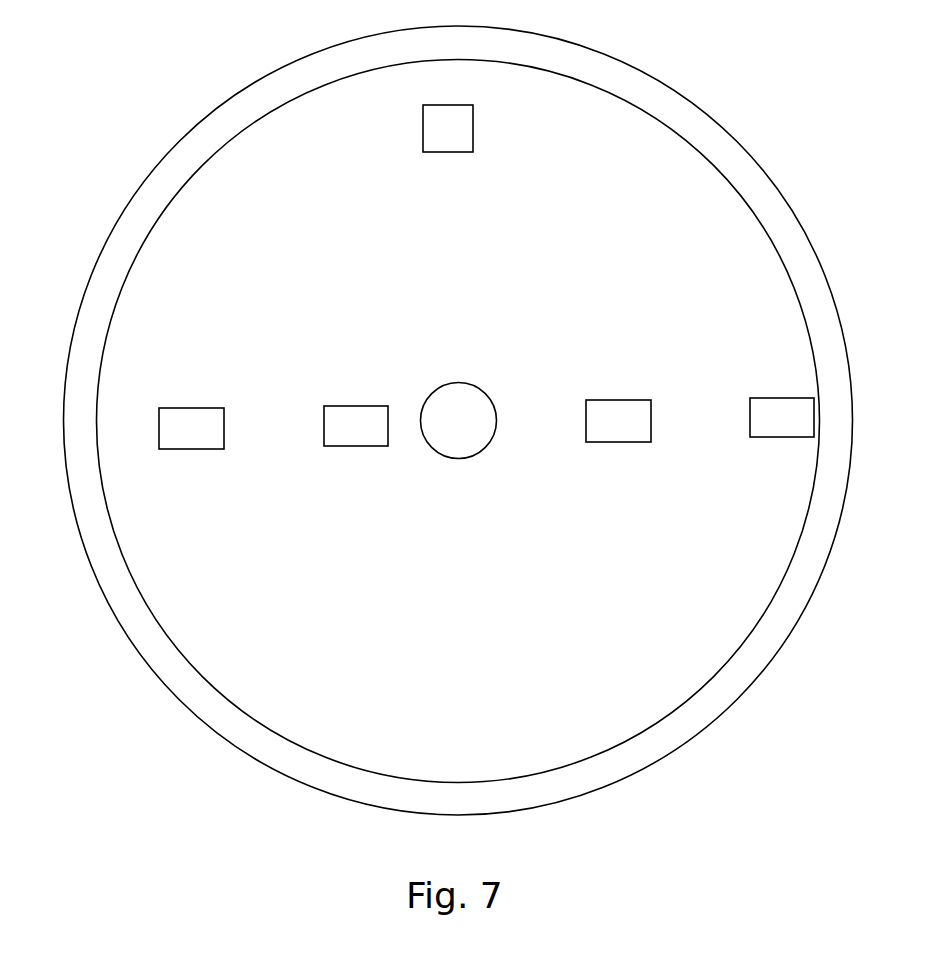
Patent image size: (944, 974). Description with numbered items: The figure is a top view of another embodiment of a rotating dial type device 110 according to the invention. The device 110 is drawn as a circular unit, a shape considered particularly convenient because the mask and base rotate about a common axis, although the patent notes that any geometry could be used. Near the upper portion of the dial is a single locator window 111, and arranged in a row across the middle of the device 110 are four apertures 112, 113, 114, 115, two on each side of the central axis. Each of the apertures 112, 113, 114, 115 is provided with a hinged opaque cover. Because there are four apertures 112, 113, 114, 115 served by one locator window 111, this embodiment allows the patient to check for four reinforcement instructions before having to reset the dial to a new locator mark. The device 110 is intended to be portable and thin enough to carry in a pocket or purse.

The device 110 is at (758, 165).
The locator window 111 is at (463, 136).
The aperture 112 is at (199, 420).
The aperture 113 is at (337, 415).
The aperture 114 is at (634, 410).
The aperture 115 is at (798, 407).